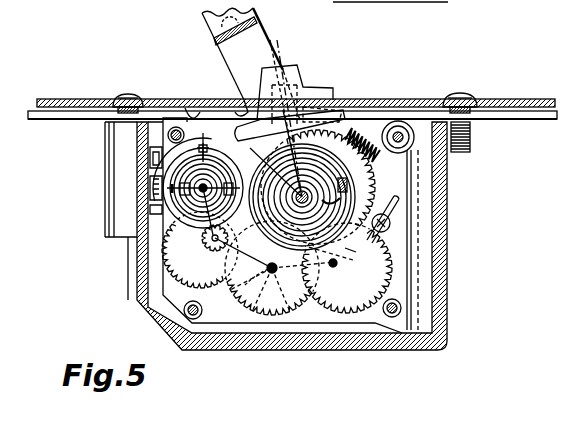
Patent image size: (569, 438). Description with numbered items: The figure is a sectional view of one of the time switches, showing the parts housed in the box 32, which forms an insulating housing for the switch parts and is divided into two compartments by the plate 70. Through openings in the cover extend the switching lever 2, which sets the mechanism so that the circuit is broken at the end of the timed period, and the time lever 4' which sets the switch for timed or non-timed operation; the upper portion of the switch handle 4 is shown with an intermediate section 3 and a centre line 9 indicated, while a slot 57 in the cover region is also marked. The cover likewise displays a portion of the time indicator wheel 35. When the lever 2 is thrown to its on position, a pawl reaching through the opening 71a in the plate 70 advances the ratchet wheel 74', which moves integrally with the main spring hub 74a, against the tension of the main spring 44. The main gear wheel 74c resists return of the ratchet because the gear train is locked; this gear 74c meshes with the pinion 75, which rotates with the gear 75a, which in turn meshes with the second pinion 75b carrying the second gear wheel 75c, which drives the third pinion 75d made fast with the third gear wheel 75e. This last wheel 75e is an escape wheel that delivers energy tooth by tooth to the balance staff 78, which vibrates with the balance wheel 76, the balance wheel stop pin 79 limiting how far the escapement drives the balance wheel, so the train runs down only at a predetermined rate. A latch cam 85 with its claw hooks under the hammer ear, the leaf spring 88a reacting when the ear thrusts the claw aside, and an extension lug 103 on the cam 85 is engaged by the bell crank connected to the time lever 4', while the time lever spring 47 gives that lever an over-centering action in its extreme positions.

The switching lever 2 is at (226, 57).
The hatched section of lever 3 is at (212, 40).
The switch handle 4 is at (214, 17).
The time lever 4' is at (295, 95).
The axis line / arrow 9 is at (282, 38).
The box 32 is at (162, 322).
The time indicator wheel 35 is at (297, 2).
The main spring 44 is at (290, 153).
The time lever spring 47 is at (382, 130).
The lever slot 57 is at (189, 117).
The plate 70 is at (232, 315).
The opening in the plate 71a is at (368, 188).
The ratchet wheel 74' is at (322, 115).
The main spring hub 74a is at (198, 184).
The main gear wheel 74c is at (408, 163).
The pinion 75 is at (362, 280).
The gear 75a is at (350, 300).
The second pinion 75b is at (262, 320).
The second gear wheel 75c is at (312, 316).
The third pinion 75d is at (200, 238).
The third gear wheel 75e is at (183, 258).
The balance wheel 76 is at (150, 151).
The balance staff 78 is at (150, 211).
The balance wheel stop pin 79 is at (150, 193).
The latch cam 85 is at (390, 240).
The leaf spring 88a is at (215, 293).
The extension lug 103 is at (340, 245).